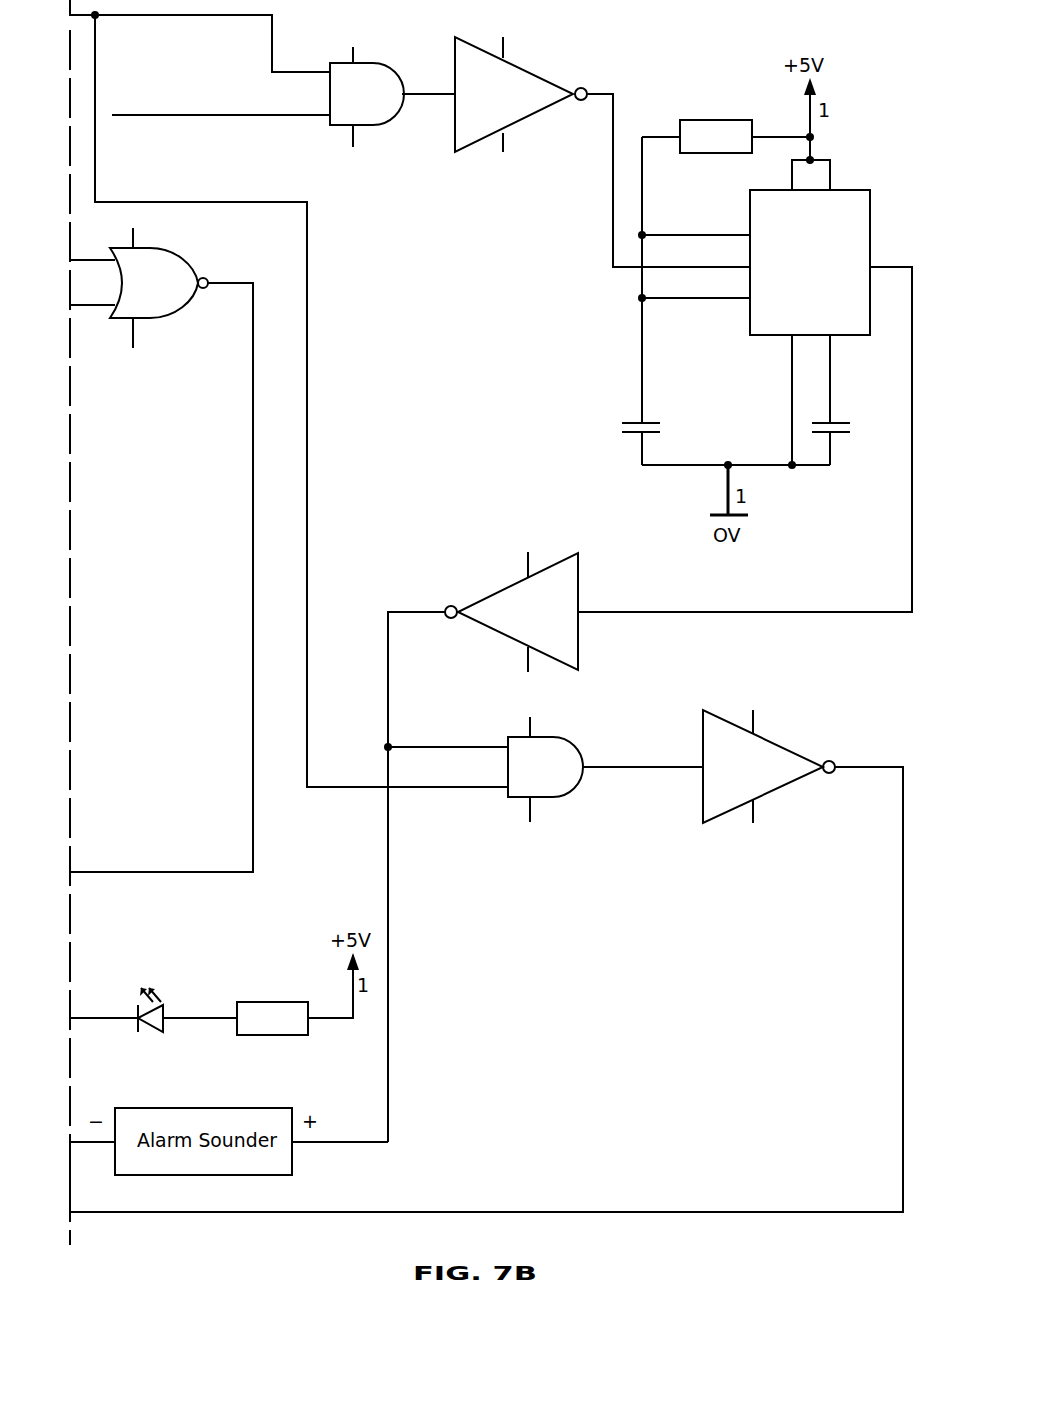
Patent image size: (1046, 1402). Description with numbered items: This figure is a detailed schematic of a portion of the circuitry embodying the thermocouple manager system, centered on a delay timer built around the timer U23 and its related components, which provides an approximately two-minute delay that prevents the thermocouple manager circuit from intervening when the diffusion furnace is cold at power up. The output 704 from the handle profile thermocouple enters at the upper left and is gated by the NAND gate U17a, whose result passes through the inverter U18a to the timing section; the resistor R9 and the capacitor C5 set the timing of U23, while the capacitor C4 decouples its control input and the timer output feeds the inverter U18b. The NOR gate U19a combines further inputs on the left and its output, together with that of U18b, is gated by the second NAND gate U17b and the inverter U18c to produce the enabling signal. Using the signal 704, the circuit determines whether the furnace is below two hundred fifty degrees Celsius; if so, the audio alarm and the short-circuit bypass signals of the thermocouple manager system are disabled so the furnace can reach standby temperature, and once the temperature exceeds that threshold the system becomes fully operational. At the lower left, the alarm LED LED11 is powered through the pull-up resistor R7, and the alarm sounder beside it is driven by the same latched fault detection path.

The output from the handle profile thermocouple 704 is at (198, 116).
The NAND gate 74LS00 U17a is at (368, 125).
The inverter 74LS04 U18a is at (521, 125).
The NOR gate 74LS32 U19a is at (162, 316).
The inverter 74LS84 U18b is at (516, 583).
The NAND gate 74LS00 U17b is at (547, 791).
The inverter 74LS04 U18c is at (773, 771).
The delay timer U23 is at (808, 273).
The resistor 1M R9 is at (715, 112).
The pull-up resistor R7 is at (272, 1036).
The capacitor 10uF C5 is at (666, 428).
The capacitor 10nF C4 is at (856, 428).
The Alarm LED LED11 is at (151, 1029).